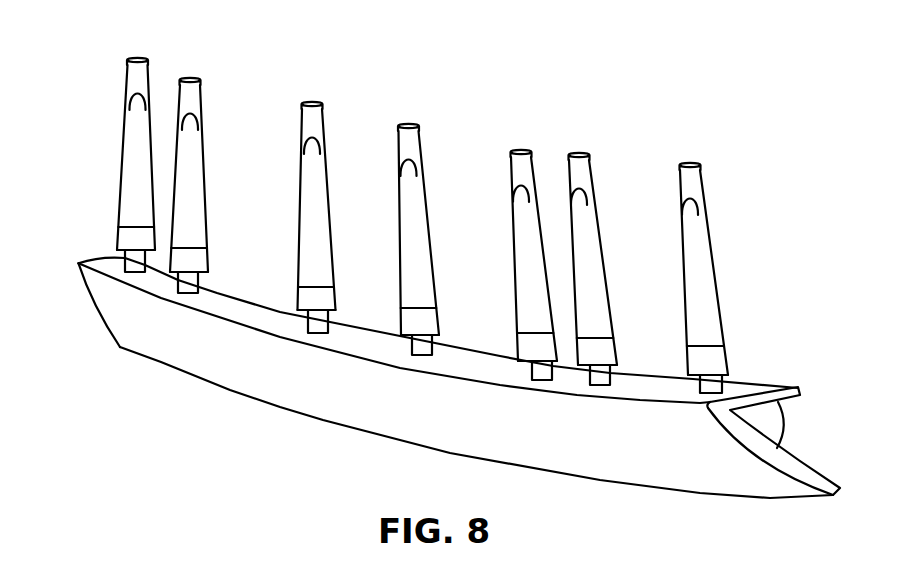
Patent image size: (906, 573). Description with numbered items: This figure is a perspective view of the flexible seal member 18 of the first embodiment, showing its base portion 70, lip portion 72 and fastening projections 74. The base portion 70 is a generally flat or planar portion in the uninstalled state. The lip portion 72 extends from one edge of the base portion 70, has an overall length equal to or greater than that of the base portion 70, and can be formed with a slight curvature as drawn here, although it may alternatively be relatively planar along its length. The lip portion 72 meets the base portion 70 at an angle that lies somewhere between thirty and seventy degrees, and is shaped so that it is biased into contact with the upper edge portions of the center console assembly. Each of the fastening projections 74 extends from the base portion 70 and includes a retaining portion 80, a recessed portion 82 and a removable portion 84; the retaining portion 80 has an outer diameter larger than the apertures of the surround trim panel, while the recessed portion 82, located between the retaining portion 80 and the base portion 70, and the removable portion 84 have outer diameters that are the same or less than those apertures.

The flexible seal member 18 is at (634, 76).
The base portion 70 is at (99, 259).
The lip portion 72 is at (467, 413).
The fastening projections 74 is at (189, 78).
The retaining portion 80 is at (118, 233).
The recessed portion 82 is at (188, 281).
The removable portion 84 is at (123, 137).